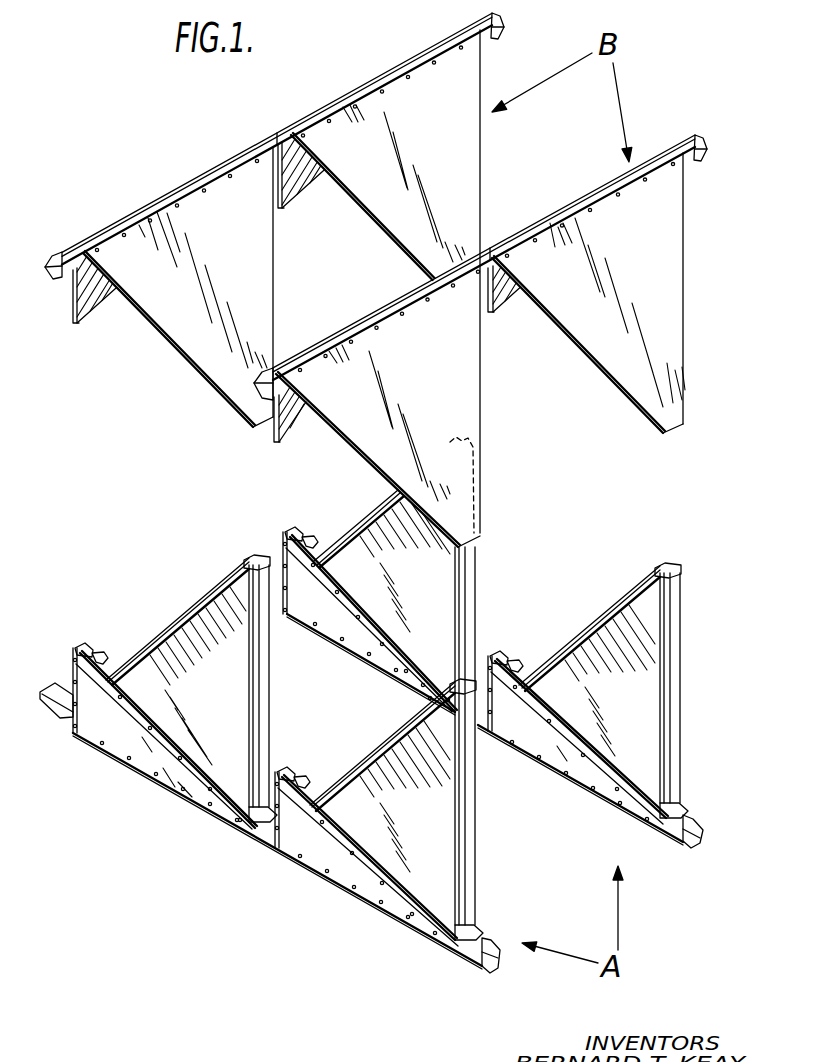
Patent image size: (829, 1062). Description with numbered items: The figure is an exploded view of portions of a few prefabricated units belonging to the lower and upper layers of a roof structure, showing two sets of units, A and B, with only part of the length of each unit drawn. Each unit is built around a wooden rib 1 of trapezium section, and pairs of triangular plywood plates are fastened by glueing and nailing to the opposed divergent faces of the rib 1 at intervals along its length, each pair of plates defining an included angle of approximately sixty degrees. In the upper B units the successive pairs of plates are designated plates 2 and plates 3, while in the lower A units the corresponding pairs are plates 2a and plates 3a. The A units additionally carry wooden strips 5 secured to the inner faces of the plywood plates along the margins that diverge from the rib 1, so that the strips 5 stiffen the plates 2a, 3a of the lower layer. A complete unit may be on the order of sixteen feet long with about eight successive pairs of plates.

The wooden rib 1 is at (62, 256).
The triangular plywood plate 2 is at (293, 427).
The triangular plywood plate 3 is at (153, 307).
The wooden strip 5 is at (200, 597).
The triangular plywood plate 3a is at (140, 753).
The triangular plywood plate 2a is at (645, 658).